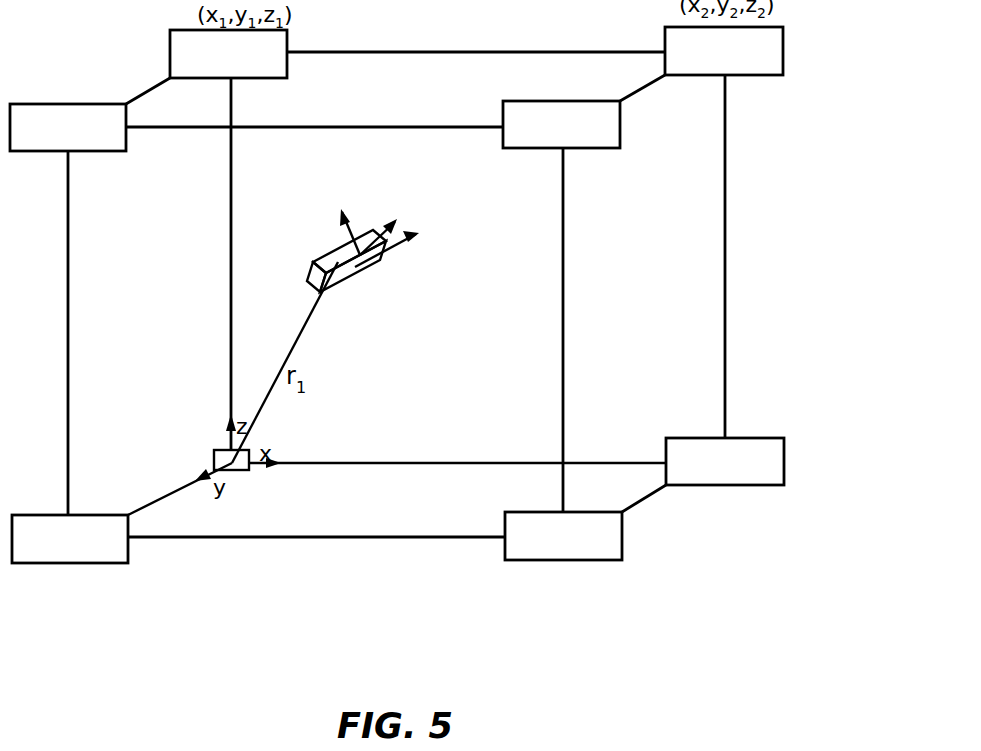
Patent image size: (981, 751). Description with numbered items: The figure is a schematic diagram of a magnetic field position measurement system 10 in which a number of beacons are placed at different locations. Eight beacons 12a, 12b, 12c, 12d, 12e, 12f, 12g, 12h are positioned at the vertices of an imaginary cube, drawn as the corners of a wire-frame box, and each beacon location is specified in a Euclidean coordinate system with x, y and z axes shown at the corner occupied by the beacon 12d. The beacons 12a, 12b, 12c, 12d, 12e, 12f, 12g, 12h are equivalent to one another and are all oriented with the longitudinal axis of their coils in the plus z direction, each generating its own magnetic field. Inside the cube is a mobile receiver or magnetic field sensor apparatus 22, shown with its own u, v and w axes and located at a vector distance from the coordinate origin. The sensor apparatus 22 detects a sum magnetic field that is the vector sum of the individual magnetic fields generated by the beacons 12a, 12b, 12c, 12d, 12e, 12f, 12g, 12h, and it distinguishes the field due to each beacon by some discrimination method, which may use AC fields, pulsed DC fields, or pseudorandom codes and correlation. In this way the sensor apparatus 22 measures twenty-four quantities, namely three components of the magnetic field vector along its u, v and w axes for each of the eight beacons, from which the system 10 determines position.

The position measurement system 10 is at (800, 226).
The beacon 12a is at (784, 447).
The beacon 12b is at (622, 534).
The beacon 12c is at (65, 563).
The beacon 12d is at (214, 458).
The beacon 12e is at (170, 51).
The beacon 12f is at (783, 50).
The beacon 12g is at (620, 134).
The beacon 12h is at (63, 104).
The magnetic field sensor apparatus 22 is at (357, 268).